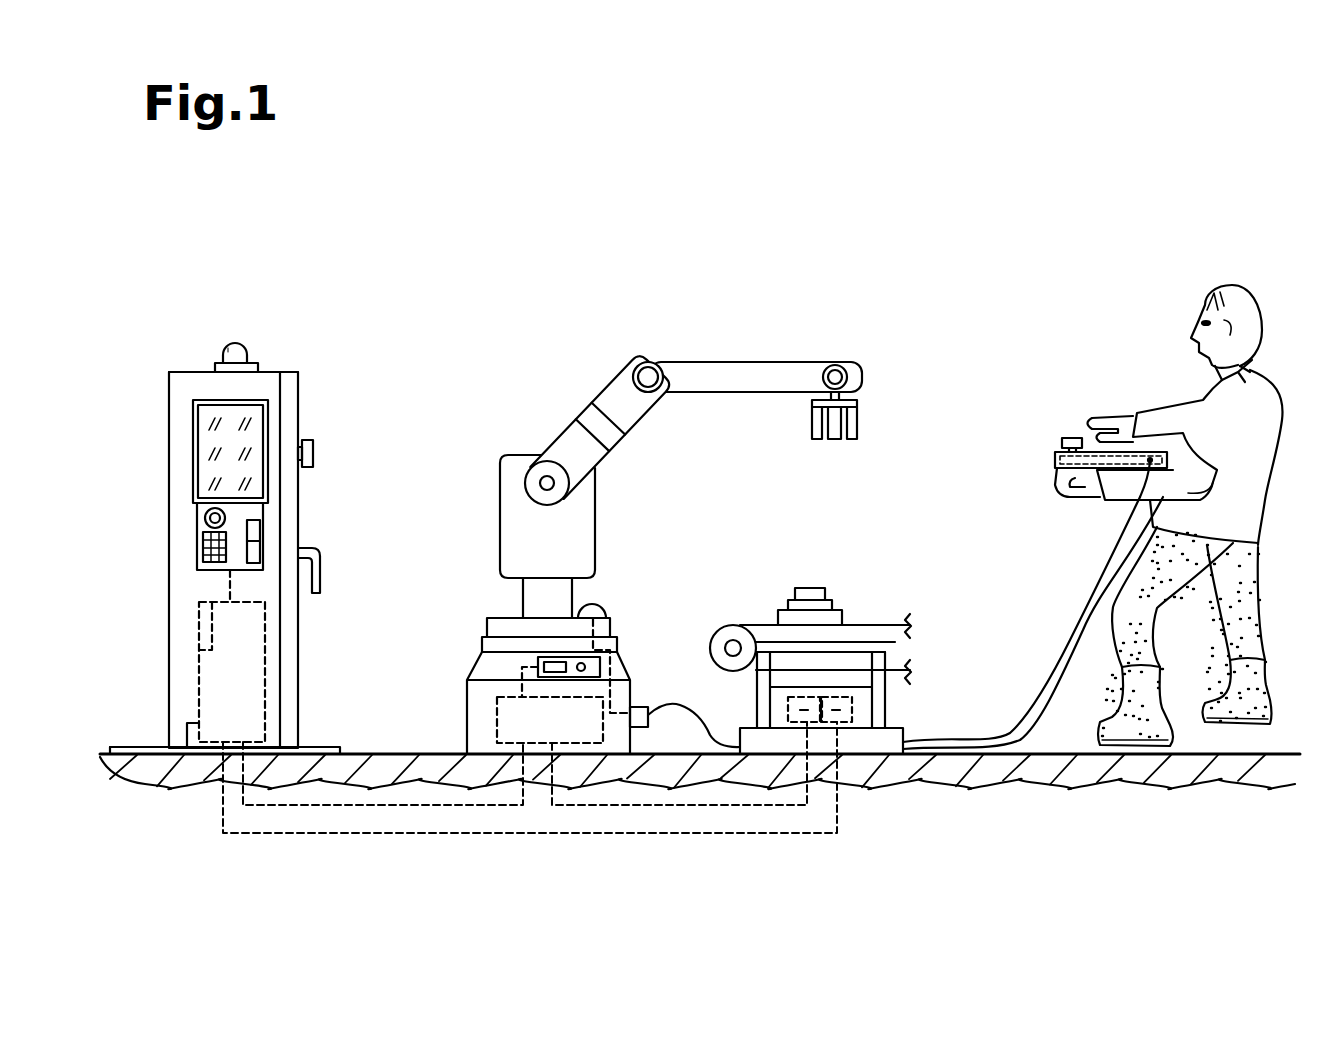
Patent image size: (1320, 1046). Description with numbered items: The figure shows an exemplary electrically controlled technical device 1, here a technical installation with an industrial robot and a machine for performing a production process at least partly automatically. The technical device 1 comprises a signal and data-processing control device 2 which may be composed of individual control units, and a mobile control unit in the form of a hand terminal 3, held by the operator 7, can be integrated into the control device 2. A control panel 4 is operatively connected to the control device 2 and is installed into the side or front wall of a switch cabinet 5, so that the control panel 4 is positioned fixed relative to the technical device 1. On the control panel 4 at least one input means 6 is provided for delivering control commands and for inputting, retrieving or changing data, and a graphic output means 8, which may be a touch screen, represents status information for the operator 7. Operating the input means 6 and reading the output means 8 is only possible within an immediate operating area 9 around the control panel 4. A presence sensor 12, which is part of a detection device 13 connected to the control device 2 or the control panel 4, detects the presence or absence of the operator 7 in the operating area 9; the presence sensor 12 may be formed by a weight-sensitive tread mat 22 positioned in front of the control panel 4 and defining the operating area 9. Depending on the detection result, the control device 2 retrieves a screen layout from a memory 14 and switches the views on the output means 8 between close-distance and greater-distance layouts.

The technical device 1 is at (669, 438).
The control device 2 is at (242, 632).
The hand terminal 3 is at (1055, 410).
The control panel 4 is at (180, 438).
The switch cabinet 5 is at (180, 400).
The input means 6 is at (205, 537).
The operator 7 is at (1256, 247).
The graphic output means 8 is at (258, 430).
The operating area 9 is at (146, 748).
The presence sensor 12 is at (245, 350).
The detection device 13 is at (218, 340).
The memory 14 is at (207, 617).
The weight-sensitive tread mat 22 is at (318, 748).